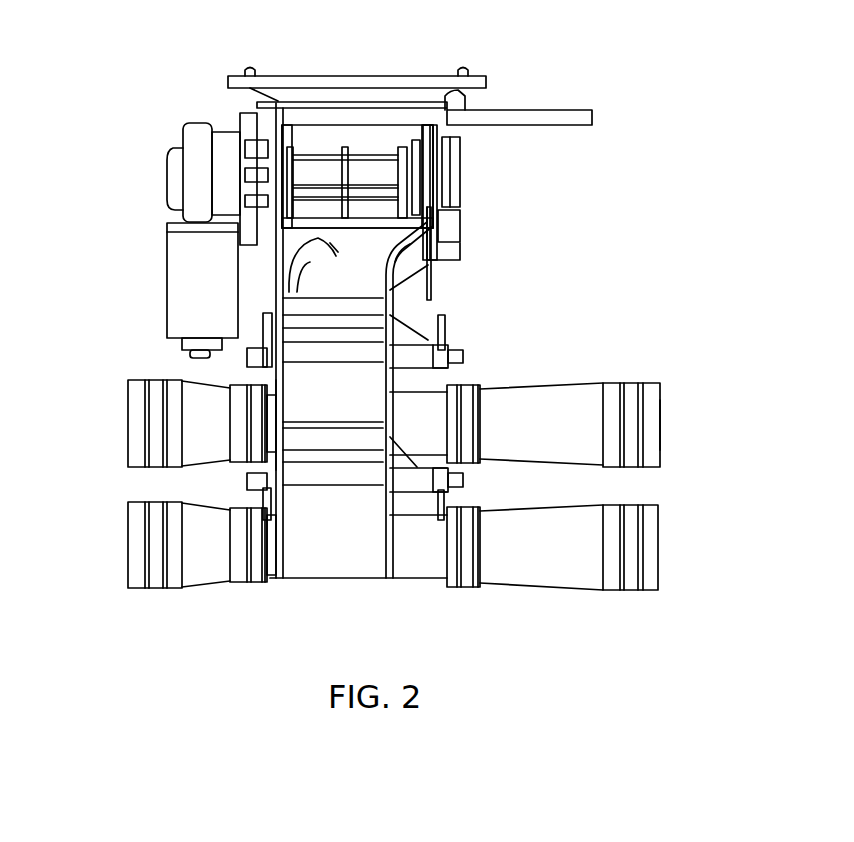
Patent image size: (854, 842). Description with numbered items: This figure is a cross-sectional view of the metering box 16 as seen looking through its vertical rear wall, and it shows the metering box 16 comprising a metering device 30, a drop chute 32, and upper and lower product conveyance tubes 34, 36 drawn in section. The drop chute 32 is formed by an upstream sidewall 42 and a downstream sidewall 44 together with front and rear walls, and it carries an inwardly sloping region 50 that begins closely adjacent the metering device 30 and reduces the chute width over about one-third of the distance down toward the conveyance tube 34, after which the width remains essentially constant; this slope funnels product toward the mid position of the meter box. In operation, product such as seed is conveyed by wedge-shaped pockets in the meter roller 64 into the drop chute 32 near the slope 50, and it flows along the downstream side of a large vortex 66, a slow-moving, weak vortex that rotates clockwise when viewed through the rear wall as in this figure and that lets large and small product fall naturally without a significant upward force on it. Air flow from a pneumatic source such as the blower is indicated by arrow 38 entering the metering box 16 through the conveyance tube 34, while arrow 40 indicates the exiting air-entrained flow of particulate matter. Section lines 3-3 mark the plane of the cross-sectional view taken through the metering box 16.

The section lines 3- 3 is at (340, 35).
The metering box 16 is at (156, 148).
The metering device 30 is at (442, 167).
The drop chute 32 is at (357, 401).
The upper conveyance tube 34 is at (560, 392).
The conveyance tube 36 is at (576, 482).
The arrow indicating air flow 38 is at (112, 418).
The arrow indicating exiting flow 40 is at (668, 420).
The upstream sidewall 42 is at (283, 412).
The downstream sidewall 44 is at (383, 287).
The inwardly sloping region 50 is at (397, 255).
The meter roller 64 is at (378, 182).
The large vortex 66 is at (313, 269).